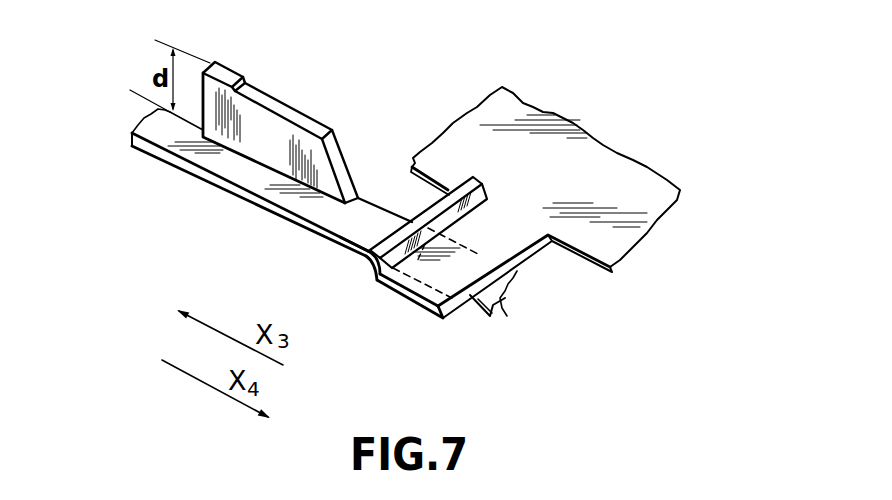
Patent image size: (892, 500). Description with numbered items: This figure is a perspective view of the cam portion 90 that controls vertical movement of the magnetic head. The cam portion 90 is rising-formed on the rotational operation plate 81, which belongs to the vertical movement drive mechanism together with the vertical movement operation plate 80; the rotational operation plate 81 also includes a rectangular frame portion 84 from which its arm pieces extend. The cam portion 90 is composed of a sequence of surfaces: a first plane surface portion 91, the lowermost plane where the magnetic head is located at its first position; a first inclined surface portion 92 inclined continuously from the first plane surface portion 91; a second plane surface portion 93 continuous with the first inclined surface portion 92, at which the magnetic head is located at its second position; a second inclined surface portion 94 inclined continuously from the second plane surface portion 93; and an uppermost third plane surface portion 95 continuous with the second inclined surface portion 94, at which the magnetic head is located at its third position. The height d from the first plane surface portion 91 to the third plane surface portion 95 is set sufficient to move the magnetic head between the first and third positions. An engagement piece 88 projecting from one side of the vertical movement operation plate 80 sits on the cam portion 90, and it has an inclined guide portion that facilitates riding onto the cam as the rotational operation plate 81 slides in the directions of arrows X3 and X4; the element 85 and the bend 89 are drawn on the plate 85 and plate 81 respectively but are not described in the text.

The vertical movement operation plate 80 is at (501, 60).
The rotational operation plate 81 is at (157, 143).
The frame portion 84 is at (507, 316).
The fixed contact plate 85 is at (623, 165).
The engagement piece 88 is at (417, 293).
The bend portion 89 is at (366, 267).
The cam portion 90 is at (256, 132).
The first plane surface portion 91 is at (371, 208).
The first inclined surface portion 92 is at (338, 147).
The second plane surface portion 93 is at (289, 109).
The second inclined surface portion 94 is at (244, 86).
The third plane surface portion 95 is at (226, 72).